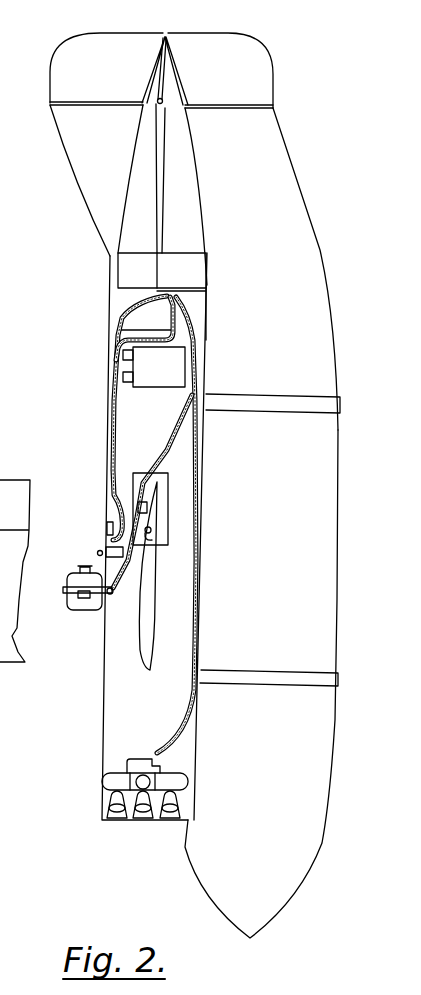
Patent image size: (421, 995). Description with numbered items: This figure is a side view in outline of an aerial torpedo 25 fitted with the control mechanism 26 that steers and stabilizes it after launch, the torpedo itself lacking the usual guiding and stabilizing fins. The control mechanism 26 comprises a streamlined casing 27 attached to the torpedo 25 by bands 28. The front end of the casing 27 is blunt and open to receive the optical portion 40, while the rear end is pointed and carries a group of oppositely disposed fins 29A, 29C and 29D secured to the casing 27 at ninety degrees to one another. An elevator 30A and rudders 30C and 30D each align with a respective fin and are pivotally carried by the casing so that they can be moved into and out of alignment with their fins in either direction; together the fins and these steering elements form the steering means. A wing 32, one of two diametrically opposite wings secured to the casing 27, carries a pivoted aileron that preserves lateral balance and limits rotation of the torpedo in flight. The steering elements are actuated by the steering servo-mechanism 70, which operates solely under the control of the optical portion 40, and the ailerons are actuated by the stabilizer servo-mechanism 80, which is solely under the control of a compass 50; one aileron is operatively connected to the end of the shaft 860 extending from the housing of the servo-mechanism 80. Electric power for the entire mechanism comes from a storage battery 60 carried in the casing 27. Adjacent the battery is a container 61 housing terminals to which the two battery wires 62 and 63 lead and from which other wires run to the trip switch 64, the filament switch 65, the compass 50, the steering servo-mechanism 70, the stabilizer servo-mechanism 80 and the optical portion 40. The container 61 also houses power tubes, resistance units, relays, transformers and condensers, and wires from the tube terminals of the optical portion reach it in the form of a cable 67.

The torpedo 25 is at (262, 870).
The control mechanism 26 is at (147, 728).
The casing 27 is at (102, 728).
The bands 28 is at (280, 397).
The fin 29A is at (162, 180).
The fin 29C is at (225, 182).
The fin 29D is at (91, 154).
The elevator 30A is at (163, 88).
The rudder 30C is at (250, 74).
The rudder 30D is at (78, 52).
The wing 32 is at (148, 622).
The optical portion 40 is at (115, 781).
The compass 50 is at (88, 603).
The storage battery 60 is at (172, 376).
The container 61 is at (128, 296).
The battery wire 62 is at (115, 360).
The battery wire 63 is at (125, 378).
The trip switch 64 is at (97, 553).
The filament switch 65 is at (107, 528).
The cable 67 is at (190, 665).
The servo-mechanism 70 is at (189, 278).
The servo-mechanism 80 is at (168, 517).
The shaft 860 is at (150, 530).